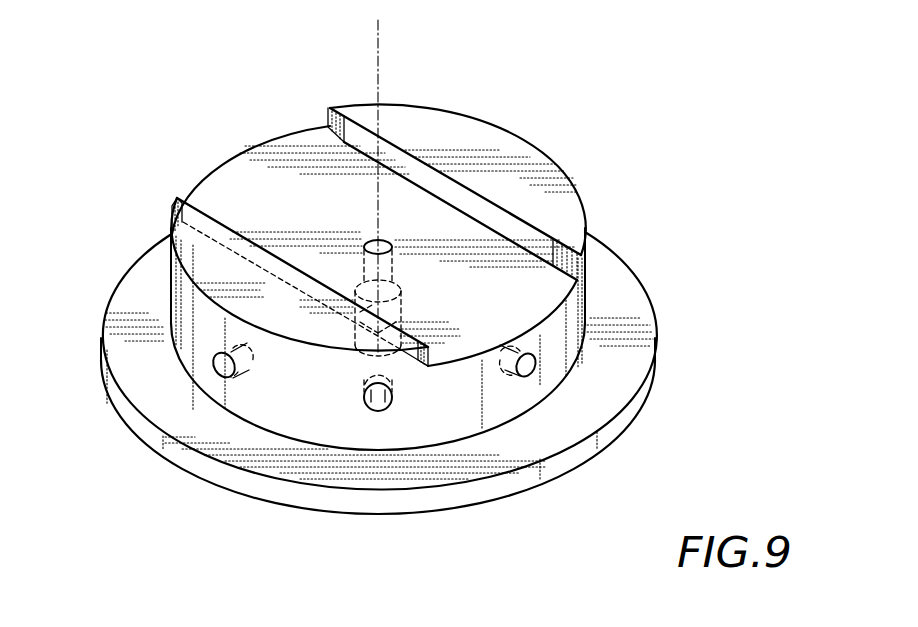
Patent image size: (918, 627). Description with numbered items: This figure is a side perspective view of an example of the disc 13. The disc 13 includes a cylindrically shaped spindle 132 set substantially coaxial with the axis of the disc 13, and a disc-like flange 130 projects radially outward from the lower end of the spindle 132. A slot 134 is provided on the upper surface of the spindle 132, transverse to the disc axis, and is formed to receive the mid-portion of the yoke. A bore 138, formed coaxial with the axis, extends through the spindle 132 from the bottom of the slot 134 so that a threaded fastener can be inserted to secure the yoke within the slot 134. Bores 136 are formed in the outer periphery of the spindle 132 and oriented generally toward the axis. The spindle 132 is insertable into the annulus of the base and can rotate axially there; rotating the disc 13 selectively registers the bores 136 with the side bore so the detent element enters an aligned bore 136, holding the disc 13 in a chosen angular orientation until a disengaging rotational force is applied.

The disc 13 is at (387, 261).
The flange 130 is at (623, 373).
The spindle 132 is at (500, 152).
The slot 134 is at (292, 130).
The bores 136 is at (217, 356).
The bore 138 is at (393, 247).